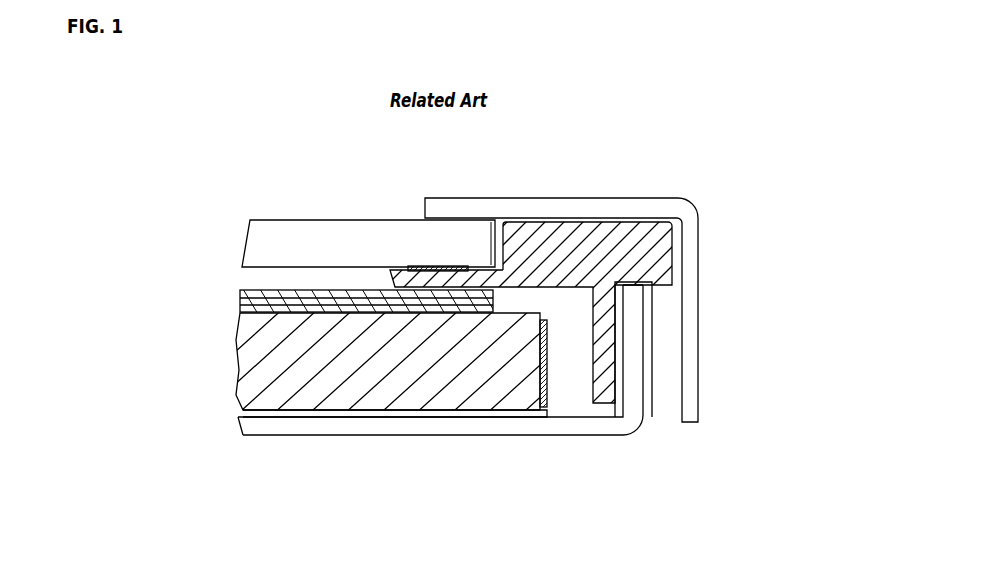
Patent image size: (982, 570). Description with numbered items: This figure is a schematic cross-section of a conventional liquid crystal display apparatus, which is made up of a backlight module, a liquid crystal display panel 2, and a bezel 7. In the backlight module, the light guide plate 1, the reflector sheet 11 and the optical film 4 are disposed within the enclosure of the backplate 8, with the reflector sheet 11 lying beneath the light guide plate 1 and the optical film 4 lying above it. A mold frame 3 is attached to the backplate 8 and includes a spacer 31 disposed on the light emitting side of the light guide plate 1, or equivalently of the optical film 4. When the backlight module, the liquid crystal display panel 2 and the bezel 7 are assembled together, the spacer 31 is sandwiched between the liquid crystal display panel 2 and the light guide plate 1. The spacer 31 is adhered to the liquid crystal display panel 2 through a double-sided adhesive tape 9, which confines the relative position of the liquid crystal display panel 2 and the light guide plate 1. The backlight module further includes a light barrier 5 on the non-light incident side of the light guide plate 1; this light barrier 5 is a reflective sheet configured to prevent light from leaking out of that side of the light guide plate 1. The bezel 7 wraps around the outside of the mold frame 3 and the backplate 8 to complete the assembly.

The light guide plate 1 is at (258, 368).
The liquid crystal display panel 2 is at (380, 237).
The mold frame 3 is at (594, 240).
The spacer 31 is at (469, 272).
The optical film 4 is at (240, 293).
The light barrier 5 is at (545, 387).
The bezel 7 is at (688, 302).
The backplate 8 is at (427, 428).
The double-sided adhesive tape 9 is at (437, 268).
The reflector sheet 11 is at (323, 413).